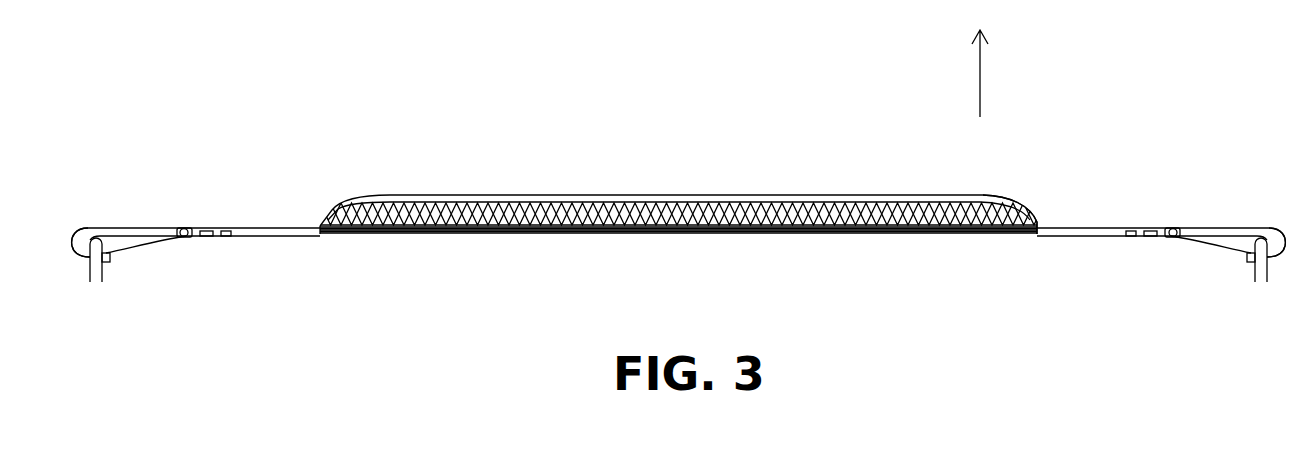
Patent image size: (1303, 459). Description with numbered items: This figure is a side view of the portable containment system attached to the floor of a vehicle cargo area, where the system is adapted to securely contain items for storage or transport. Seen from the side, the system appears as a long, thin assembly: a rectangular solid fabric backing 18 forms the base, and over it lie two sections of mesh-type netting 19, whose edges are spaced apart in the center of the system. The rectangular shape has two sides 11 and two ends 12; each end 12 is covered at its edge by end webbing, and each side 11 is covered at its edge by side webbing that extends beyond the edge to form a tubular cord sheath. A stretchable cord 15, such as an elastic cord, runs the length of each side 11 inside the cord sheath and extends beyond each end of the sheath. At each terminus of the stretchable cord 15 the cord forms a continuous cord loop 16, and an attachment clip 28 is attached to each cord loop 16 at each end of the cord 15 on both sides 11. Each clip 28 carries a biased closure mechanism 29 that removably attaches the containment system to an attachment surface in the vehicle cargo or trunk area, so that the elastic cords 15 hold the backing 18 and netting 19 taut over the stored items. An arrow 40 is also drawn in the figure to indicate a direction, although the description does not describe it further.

The side 11 is at (805, 235).
The end 12 is at (1037, 223).
The stretchable cord 15 is at (270, 235).
The cord loop 16 is at (183, 229).
The solid fabric backing 18 is at (580, 234).
The mesh-type netting 19 is at (527, 213).
The attachment clip 28 is at (125, 228).
The biased closure mechanism 29 is at (122, 256).
The upward direction arrow 40 is at (991, 83).